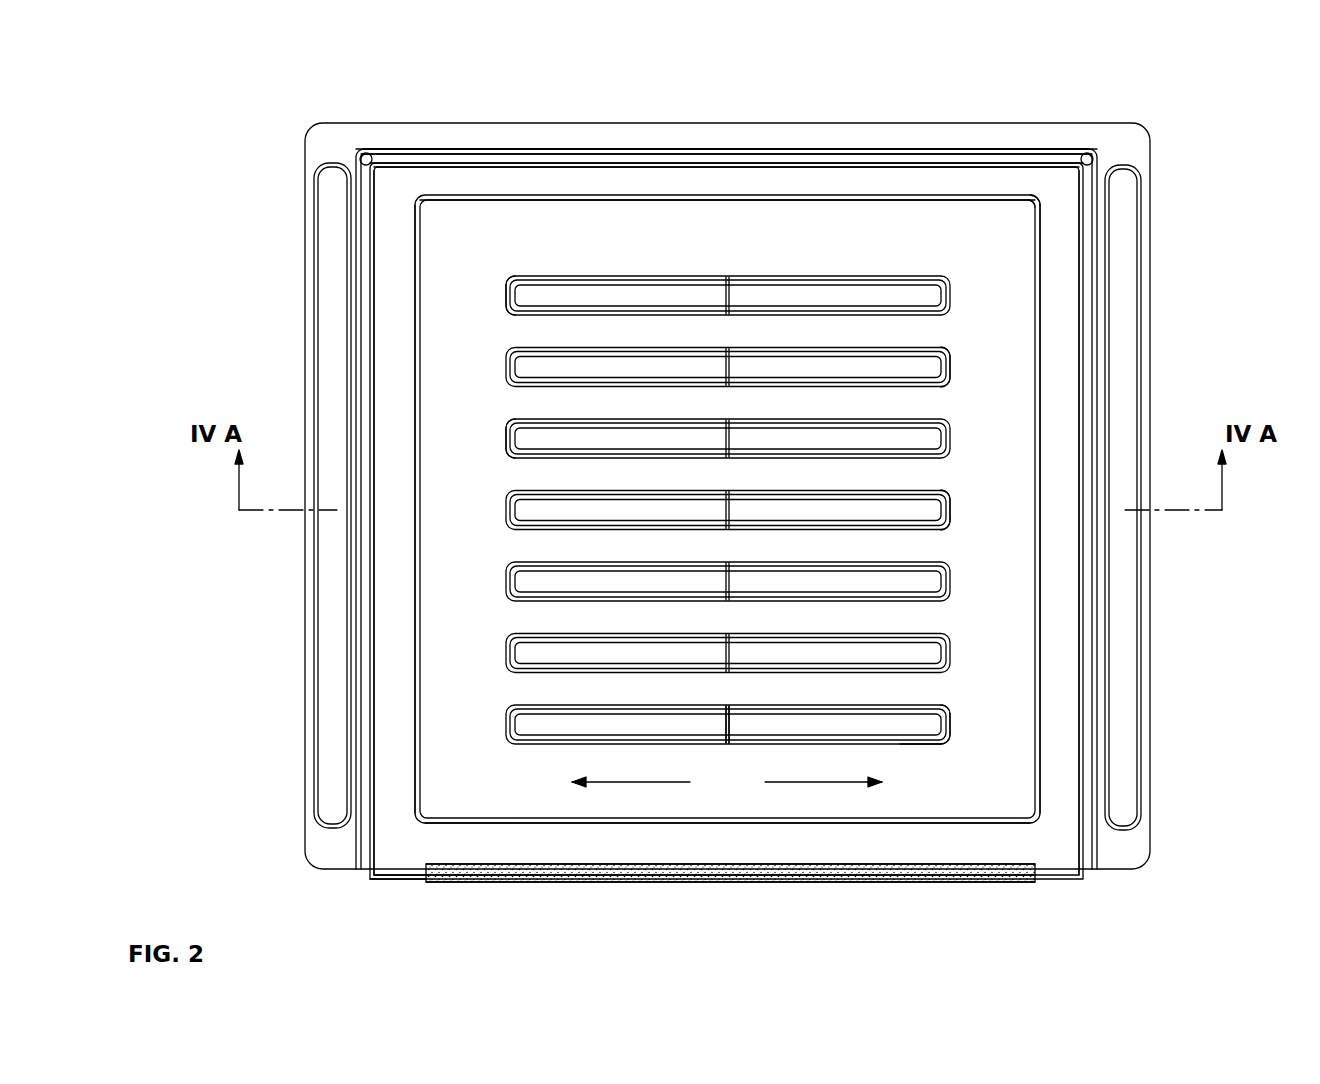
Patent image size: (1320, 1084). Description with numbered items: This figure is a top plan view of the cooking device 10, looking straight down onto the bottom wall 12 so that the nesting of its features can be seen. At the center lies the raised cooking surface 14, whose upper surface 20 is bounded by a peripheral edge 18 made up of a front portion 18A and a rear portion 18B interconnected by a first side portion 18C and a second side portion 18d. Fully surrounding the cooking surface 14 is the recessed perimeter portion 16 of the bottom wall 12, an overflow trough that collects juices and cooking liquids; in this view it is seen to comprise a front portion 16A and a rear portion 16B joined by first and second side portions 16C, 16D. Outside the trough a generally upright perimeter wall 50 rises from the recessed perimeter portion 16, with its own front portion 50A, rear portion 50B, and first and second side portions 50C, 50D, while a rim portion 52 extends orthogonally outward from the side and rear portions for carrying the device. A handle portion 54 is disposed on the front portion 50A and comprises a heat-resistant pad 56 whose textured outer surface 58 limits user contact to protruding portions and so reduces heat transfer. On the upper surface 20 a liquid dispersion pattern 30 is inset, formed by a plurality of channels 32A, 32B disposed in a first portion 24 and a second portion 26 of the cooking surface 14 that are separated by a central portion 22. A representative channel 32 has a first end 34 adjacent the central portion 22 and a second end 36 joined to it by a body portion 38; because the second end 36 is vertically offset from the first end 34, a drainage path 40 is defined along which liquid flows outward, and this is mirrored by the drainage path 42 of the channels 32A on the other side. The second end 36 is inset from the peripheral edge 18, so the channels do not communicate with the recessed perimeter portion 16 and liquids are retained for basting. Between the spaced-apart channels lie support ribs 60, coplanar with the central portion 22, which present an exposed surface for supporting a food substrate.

The cooking device 10 is at (342, 86).
The bottom wall 12 is at (913, 178).
The cooking surface 14 is at (500, 188).
The recessed perimeter portion 16 is at (392, 182).
The front portion of recessed perimeter portion 16A is at (790, 845).
The rear portion of recessed perimeter portion 16B is at (670, 183).
The first side portion of recessed perimeter portion 16C is at (392, 341).
The second side portion of recessed perimeter portion 16D is at (1063, 315).
The peripheral edge 18 is at (568, 195).
The front portion of peripheral edge 18A is at (900, 818).
The rear portion of peripheral edge 18B is at (755, 195).
The first side portion of peripheral edge 18C is at (416, 553).
The second side portion of peripheral edge 18d is at (1040, 253).
The upper surface 20 is at (630, 251).
The central portion 22 is at (728, 688).
The first portion 24 is at (487, 686).
The second portion 26 is at (960, 549).
The liquid dispersion pattern 30 is at (1008, 182).
The channel 32 is at (927, 748).
The channels 32A is at (504, 437).
The channels 32B is at (1043, 363).
The first end 34 is at (730, 725).
The second end 36 is at (950, 723).
The body portion 38 is at (782, 722).
The drainage path 40 is at (813, 778).
The drainage path 42 is at (610, 838).
The upright perimeter wall 50 is at (288, 684).
The front portion of upright perimeter wall 50A is at (384, 872).
The rear portion of upright perimeter wall 50B is at (792, 155).
The first side portion of upright perimeter wall 50C is at (358, 580).
The second side portion of upright perimeter wall 50D is at (1093, 395).
The rim portion 52 is at (327, 146).
The handle portion 54 is at (505, 895).
The pad 56 is at (580, 884).
The outer surface 58 is at (607, 872).
The support ribs 60 is at (525, 617).